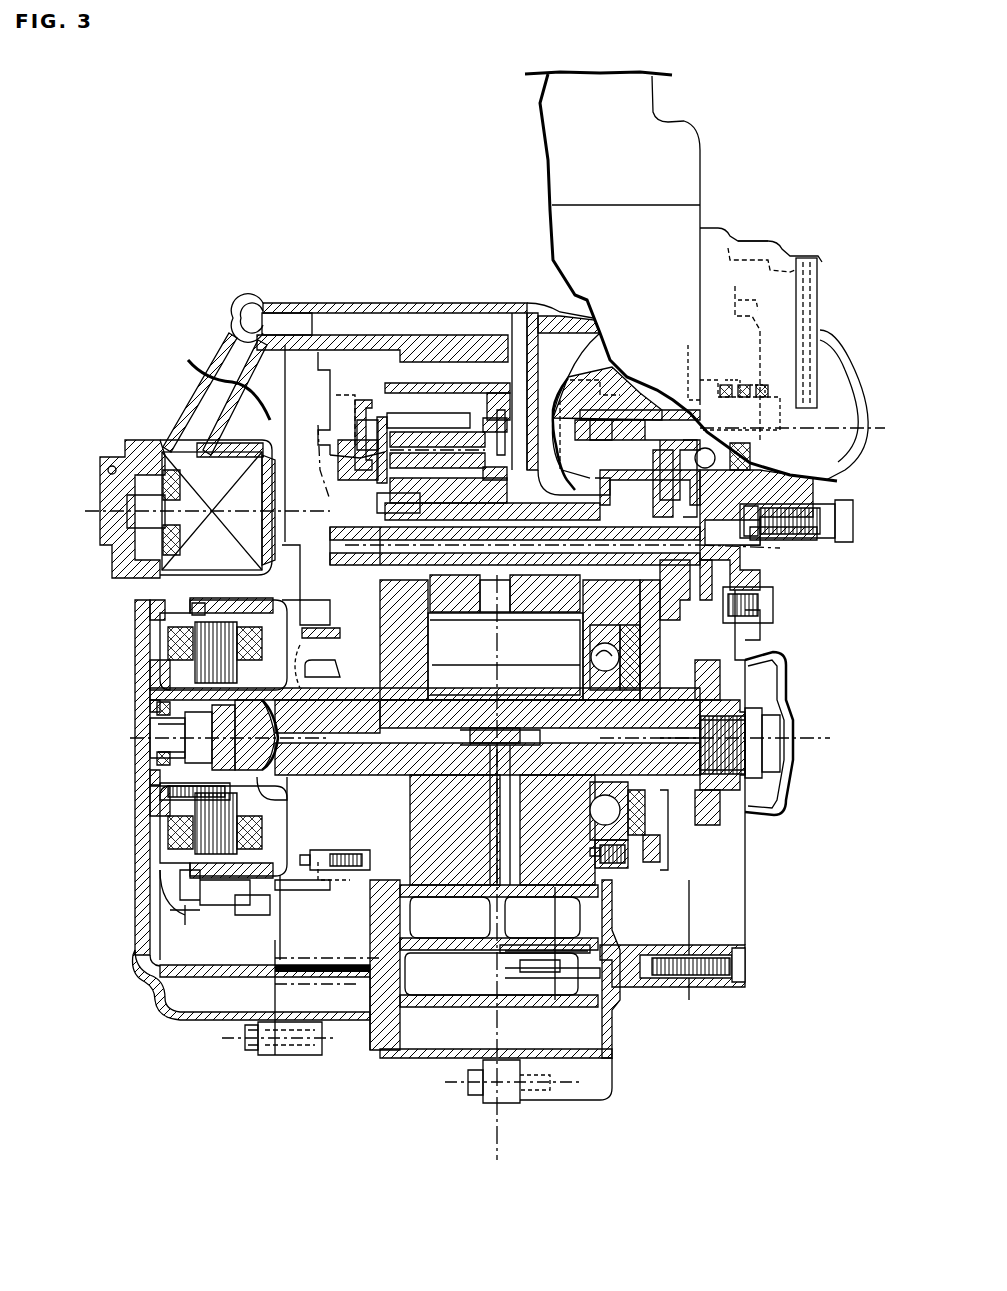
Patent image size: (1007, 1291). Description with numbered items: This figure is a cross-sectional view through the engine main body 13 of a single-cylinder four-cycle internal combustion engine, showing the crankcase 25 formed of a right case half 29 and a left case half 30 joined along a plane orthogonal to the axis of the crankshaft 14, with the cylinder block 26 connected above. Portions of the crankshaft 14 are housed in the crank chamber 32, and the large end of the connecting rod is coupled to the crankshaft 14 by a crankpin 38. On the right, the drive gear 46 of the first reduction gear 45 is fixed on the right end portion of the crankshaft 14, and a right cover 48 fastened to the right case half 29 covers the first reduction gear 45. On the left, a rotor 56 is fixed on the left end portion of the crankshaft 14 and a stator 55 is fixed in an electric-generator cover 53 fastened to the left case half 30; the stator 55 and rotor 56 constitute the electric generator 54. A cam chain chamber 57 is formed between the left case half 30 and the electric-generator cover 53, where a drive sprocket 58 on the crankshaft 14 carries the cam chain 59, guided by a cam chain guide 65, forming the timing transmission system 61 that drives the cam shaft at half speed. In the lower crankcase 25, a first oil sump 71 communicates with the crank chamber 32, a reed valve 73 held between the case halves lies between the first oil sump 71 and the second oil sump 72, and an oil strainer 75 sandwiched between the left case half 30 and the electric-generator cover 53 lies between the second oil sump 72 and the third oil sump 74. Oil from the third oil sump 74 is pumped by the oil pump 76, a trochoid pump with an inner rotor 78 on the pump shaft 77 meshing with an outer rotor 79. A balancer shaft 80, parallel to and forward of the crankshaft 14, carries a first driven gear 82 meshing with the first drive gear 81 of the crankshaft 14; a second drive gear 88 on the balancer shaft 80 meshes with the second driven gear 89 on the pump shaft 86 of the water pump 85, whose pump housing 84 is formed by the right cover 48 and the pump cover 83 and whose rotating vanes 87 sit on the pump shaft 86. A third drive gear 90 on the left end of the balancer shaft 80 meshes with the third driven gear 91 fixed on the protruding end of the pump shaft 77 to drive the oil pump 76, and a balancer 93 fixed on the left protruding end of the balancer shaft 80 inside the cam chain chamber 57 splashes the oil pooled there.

The engine main body 13 is at (624, 1023).
The crankshaft 14 is at (740, 712).
The crankcase 25 is at (412, 332).
The cylinder block 26 is at (675, 124).
The right case half 29 is at (571, 349).
The left case half 30 is at (382, 303).
The crank chamber 32 is at (510, 890).
The crankpin 38 is at (500, 660).
The first reduction gear 45 is at (738, 671).
The drive gear 46 is at (708, 800).
The right cover 48 is at (752, 243).
The electric-generator cover 53 is at (185, 425).
The electric generator 54 is at (280, 575).
The stator 55 is at (250, 832).
The rotor 56 is at (210, 577).
The cam chain chamber 57 is at (314, 487).
The drive sprocket 58 is at (312, 780).
The cam chain 59 is at (312, 660).
The timing transmission system 61 is at (350, 870).
The cam chain guide 65 is at (330, 640).
The first oil sump 71 is at (472, 926).
The second oil sump 72 is at (462, 975).
The reed valve 73 is at (540, 968).
The third oil sump 74 is at (405, 1048).
The oil strainer 75 is at (322, 962).
The oil pump 76 is at (514, 418).
The pump shaft 77 is at (435, 432).
The inner rotor 78 is at (512, 458).
The outer rotor 79 is at (548, 480).
The balancer shaft 80 is at (720, 558).
The first drive gear 81 is at (655, 840).
The first driven gear 82 is at (650, 385).
The pump cover 83 is at (818, 260).
The pump housing 84 is at (828, 186).
The water pump 85 is at (832, 370).
The pump shaft 86 is at (660, 470).
The rotating vanes 87 is at (815, 530).
The second drive gear 88 is at (688, 600).
The second driven gear 89 is at (690, 358).
The third drive gear 90 is at (345, 470).
The gear 91 is at (362, 398).
The balancer 93 is at (270, 595).